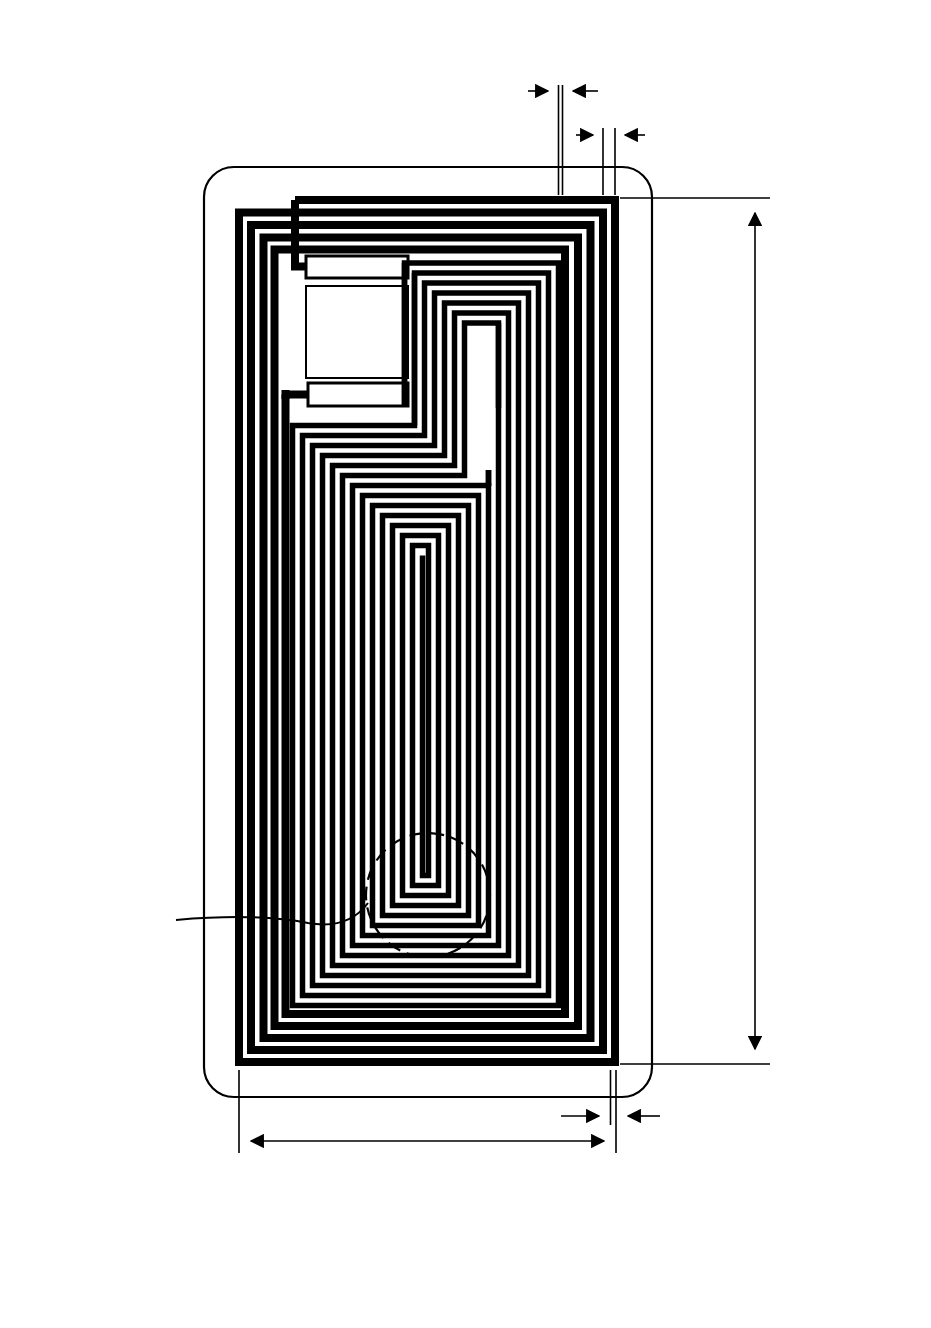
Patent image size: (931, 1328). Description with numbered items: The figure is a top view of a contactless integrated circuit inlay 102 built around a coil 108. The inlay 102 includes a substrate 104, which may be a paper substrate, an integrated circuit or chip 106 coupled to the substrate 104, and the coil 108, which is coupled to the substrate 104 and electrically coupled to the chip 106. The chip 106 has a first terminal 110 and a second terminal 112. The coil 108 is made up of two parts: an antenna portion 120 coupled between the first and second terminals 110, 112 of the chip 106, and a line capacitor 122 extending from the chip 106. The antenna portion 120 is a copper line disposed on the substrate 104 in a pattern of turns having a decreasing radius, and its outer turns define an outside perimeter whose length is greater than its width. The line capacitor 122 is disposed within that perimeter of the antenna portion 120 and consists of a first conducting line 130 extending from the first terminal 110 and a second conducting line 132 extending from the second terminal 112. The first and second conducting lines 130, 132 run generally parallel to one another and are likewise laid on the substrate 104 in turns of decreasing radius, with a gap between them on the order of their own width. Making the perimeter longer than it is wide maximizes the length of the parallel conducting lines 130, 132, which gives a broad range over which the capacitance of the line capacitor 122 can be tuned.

The contactless integrated circuit inlay 102 is at (652, 58).
The substrate 104 is at (212, 430).
The integrated circuit 106 is at (357, 332).
The coil 108 is at (296, 404).
The first terminal 110 is at (330, 262).
The second terminal 112 is at (310, 385).
The antenna portion 120 is at (236, 198).
The line capacitor 122 is at (486, 447).
The first conducting line 130 is at (413, 250).
The second conducting line 132 is at (482, 328).